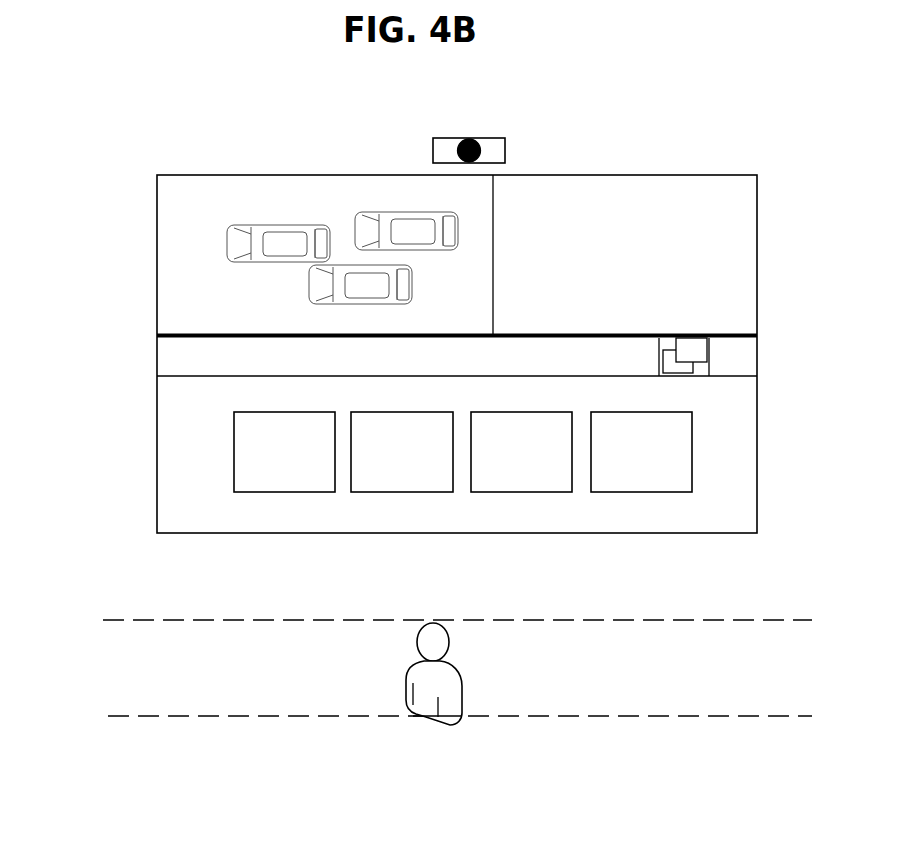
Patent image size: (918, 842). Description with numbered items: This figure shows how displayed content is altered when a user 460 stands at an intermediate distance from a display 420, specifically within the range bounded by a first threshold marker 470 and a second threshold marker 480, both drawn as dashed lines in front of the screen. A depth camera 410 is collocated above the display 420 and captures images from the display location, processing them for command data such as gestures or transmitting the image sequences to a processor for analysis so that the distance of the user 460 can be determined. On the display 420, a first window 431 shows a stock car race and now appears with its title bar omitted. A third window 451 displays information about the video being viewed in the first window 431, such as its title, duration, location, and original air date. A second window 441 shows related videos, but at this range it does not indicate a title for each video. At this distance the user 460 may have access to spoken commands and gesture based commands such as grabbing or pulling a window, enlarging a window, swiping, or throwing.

The depth camera 410 is at (414, 114).
The display 420 is at (127, 161).
The first window 431 is at (193, 246).
The second window 441 is at (244, 364).
The third window 451 is at (725, 197).
The user 460 is at (434, 684).
The first threshold marker 470 is at (122, 639).
The second threshold marker 480 is at (122, 734).